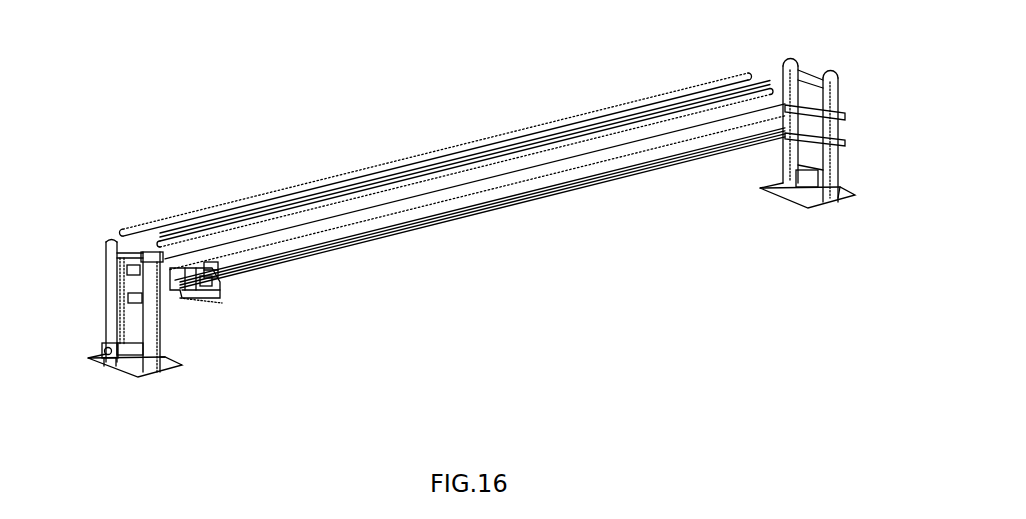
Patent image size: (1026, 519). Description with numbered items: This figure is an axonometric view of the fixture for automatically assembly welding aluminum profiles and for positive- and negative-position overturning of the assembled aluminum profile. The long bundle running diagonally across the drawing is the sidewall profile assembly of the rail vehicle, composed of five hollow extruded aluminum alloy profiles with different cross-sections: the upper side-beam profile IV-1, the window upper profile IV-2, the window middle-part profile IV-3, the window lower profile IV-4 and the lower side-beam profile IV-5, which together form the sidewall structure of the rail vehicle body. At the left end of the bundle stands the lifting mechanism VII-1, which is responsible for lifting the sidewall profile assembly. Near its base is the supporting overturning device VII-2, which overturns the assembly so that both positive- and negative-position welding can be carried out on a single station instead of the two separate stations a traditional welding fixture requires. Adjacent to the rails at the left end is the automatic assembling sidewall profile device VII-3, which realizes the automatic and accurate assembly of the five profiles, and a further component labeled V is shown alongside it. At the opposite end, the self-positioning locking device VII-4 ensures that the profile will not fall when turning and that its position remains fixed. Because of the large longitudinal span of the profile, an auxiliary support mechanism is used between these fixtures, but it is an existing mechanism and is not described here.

The lifting mechanism VII-1 is at (108, 300).
The supporting overturning device VII-2 is at (103, 354).
The automatic assembling sidewall profile device VII-3 is at (203, 303).
The carriage V is at (211, 277).
The upper side-beam profile IV-1 is at (472, 143).
The window upper profile IV-2 is at (565, 126).
The window middle-part profile IV-3 is at (680, 141).
The window lower profile IV-4 is at (753, 133).
The lower side-beam profile IV-5 is at (608, 178).
The self-positioning locking device VII-4 is at (935, 77).